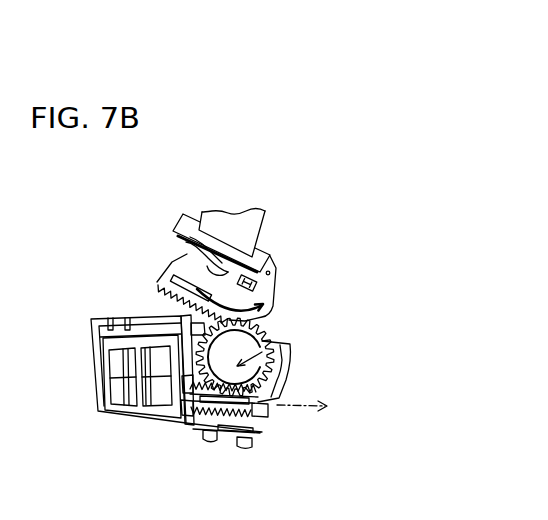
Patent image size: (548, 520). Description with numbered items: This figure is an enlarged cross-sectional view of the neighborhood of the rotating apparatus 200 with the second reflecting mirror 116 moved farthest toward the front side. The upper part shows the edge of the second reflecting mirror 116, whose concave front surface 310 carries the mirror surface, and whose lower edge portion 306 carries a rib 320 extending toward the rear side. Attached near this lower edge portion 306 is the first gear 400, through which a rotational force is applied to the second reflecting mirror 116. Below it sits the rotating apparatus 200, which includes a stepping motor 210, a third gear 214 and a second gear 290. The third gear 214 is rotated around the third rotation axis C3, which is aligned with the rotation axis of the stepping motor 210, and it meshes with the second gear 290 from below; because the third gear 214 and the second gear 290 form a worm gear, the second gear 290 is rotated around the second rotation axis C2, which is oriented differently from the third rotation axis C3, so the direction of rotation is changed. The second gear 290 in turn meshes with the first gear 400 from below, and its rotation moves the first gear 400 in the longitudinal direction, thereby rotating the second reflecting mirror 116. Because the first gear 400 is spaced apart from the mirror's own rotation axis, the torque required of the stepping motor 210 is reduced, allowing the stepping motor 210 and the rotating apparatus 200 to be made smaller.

The second reflecting mirror 116 is at (259, 198).
The front surface 310 is at (175, 228).
The rib 320 is at (254, 257).
The lower edge portion 306 is at (186, 243).
The first gear 400 is at (276, 296).
The rotating apparatus 200 is at (167, 429).
The stepping motor 210 is at (120, 396).
The second gear 290 is at (270, 333).
The third gear 214 is at (260, 416).
The second rotation axis C2 is at (278, 362).
The third rotation axis C3 is at (290, 410).